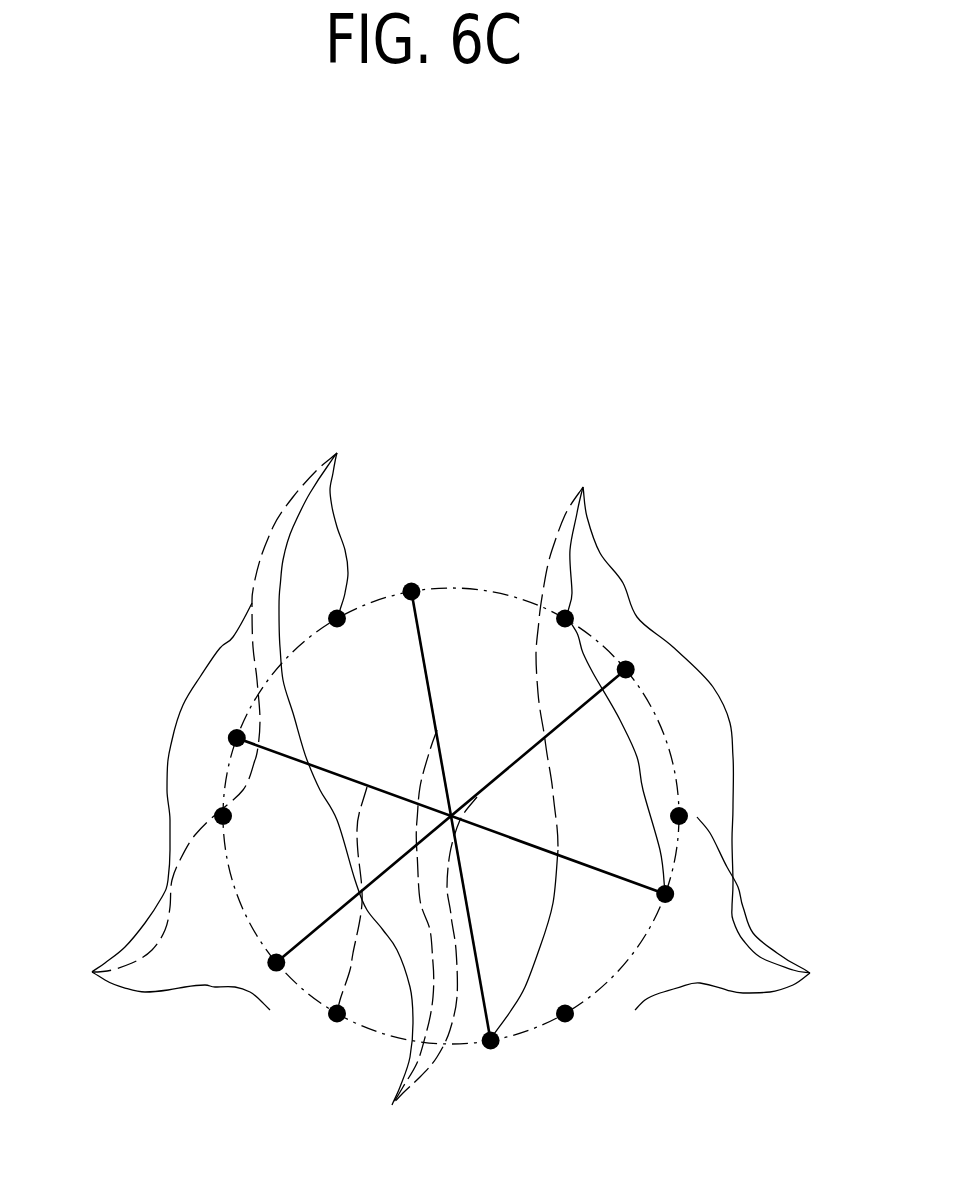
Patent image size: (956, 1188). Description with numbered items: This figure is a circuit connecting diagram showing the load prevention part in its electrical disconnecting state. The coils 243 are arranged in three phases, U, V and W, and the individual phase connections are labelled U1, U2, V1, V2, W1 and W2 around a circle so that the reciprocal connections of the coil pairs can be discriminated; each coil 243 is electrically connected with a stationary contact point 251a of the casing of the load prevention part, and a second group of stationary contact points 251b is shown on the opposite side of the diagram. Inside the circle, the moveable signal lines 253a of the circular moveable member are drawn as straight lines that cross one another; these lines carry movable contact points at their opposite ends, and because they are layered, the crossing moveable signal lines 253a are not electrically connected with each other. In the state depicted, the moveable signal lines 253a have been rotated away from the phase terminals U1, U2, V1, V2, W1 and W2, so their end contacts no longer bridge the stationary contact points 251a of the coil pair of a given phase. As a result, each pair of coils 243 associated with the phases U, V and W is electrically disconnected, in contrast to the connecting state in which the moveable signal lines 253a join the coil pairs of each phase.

The stationary contact point 251a is at (252, 760).
The second coil (winding) of first phase group 251b is at (650, 743).
The moveable signal line 253a is at (407, 937).
The coil 243 is at (451, 885).
The U-phase coil connection U1 is at (328, 1013).
The U-phase coil connection U2 is at (574, 1013).
The V-phase coil connection V1 is at (214, 816).
The V-phase coil connection V2 is at (688, 816).
The W-phase coil connection W1 is at (328, 619).
The W-phase coil connection W2 is at (574, 619).